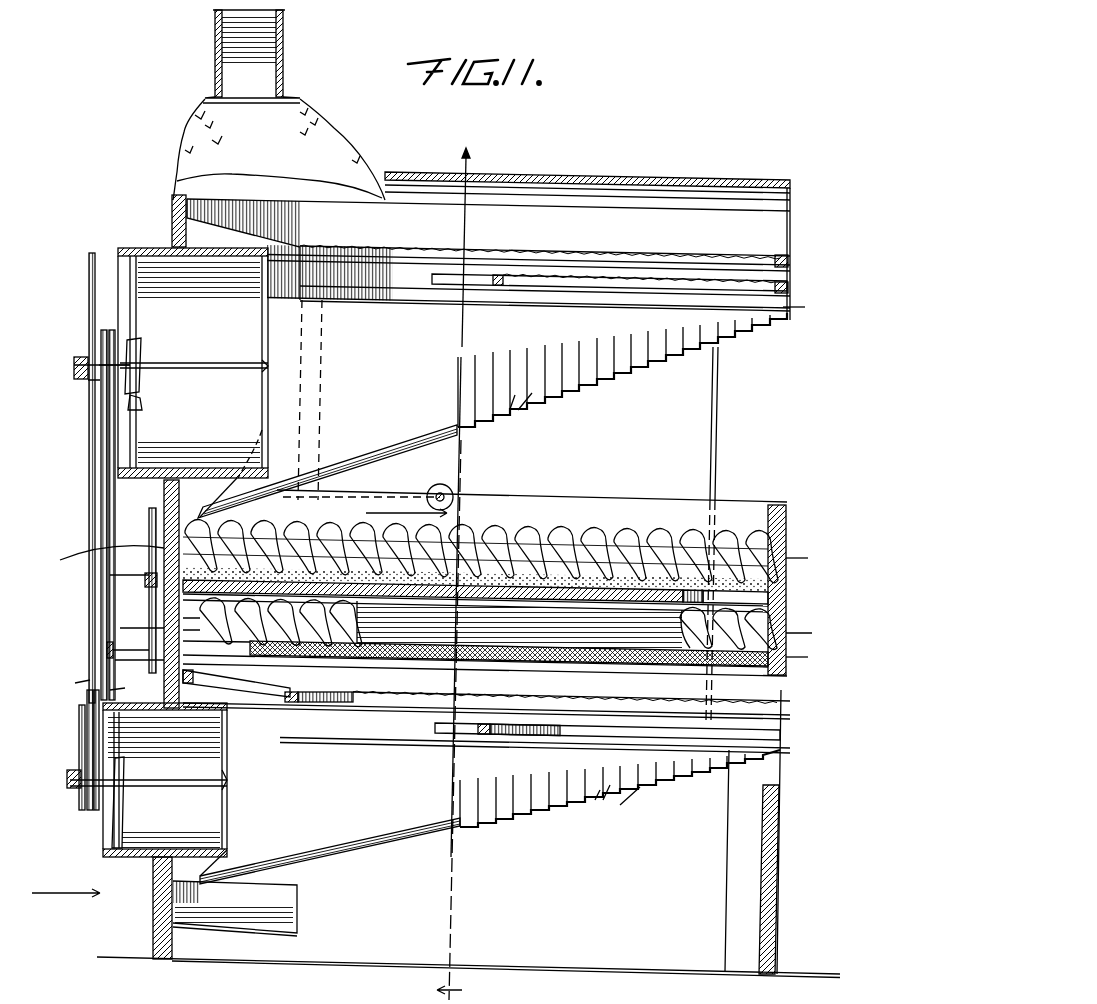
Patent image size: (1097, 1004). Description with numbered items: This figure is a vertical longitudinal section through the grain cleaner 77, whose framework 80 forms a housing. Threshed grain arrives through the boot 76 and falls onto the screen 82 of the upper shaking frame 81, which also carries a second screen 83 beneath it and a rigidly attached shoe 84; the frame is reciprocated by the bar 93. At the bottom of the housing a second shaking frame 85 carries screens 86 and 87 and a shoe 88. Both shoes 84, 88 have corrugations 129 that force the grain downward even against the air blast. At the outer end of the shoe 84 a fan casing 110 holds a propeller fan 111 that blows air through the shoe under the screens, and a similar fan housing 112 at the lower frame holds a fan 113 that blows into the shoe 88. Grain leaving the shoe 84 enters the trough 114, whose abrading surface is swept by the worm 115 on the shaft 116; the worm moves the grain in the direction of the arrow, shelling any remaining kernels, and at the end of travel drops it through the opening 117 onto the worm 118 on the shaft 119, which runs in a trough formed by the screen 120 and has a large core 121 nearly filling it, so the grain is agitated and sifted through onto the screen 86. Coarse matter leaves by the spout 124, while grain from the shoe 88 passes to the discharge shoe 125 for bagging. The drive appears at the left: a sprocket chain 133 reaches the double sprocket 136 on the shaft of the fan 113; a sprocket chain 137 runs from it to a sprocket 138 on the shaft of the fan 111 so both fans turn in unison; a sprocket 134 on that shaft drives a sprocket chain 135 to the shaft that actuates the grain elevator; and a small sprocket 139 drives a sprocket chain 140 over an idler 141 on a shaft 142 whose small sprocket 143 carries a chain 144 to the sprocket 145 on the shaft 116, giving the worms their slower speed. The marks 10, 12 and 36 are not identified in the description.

The direction of flow 10 is at (66, 883).
The section line 12 is at (463, 563).
The shaft 36 is at (113, 324).
The boot 76 is at (283, 50).
The cleaner 77 is at (650, 188).
The framework 80 is at (163, 482).
The shaking frame 81 is at (806, 307).
The screen 82 is at (520, 250).
The second screen 83 is at (608, 278).
The shoe 84 is at (545, 404).
The second shaking frame 85 is at (372, 710).
The screen 86 is at (592, 717).
The screen 87 is at (625, 740).
The shoe 88 is at (535, 800).
The bar 93 is at (300, 418).
The fan casing 110 is at (263, 248).
The propeller fan 111 is at (120, 255).
The fan housing 112 is at (140, 857).
The fan 113 is at (113, 815).
The lower screw conveyor 114 is at (575, 590).
The worm 115 is at (505, 540).
The shaft 116 is at (437, 565).
The opening 117 is at (745, 600).
The worm 118 is at (510, 658).
The shaft 119 is at (473, 630).
The screen 120 is at (545, 657).
The core 121 is at (423, 652).
The spout 124 is at (216, 655).
The discharge shoe 125 is at (235, 920).
The corrugations 129 is at (570, 613).
The sprocket chain 133 is at (88, 735).
The sprocket 134 is at (80, 381).
The sprocket chain 135 is at (88, 310).
The double sprocket 136 is at (80, 790).
The sprocket chain 137 is at (65, 684).
The sprocket 138 is at (100, 345).
The small sprocket 139 is at (136, 352).
The sprocket chain 140 is at (115, 435).
The idler 141 is at (133, 689).
The shaft 142 is at (115, 660).
The small sprocket 143 is at (185, 708).
The chain 144 is at (147, 610).
The sprocket 145 is at (150, 508).